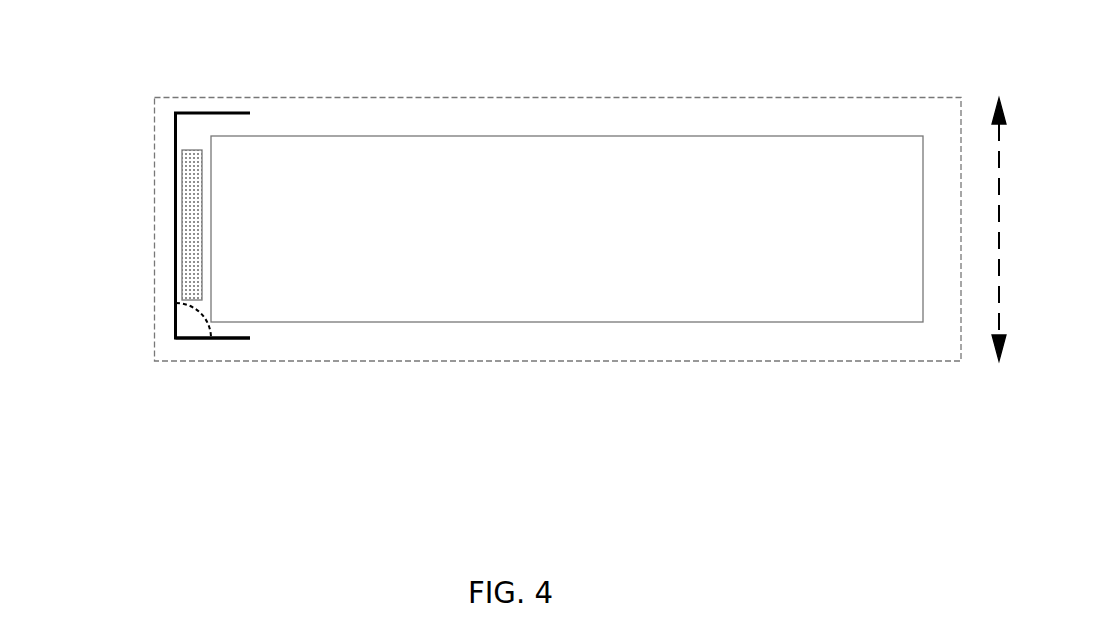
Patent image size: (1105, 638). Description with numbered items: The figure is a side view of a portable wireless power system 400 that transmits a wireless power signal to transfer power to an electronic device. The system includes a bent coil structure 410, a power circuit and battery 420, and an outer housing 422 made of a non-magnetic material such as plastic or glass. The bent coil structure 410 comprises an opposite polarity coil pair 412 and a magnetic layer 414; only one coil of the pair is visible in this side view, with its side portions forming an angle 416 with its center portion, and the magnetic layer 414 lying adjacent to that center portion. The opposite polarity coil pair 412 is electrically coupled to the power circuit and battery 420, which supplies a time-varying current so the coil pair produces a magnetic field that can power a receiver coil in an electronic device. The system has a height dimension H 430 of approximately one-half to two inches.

The portable wireless power system 400 is at (123, 505).
The bent coil structure 410 is at (120, 222).
The opposite polarity coil pair 412 is at (228, 338).
The magnetic layer 414 is at (193, 150).
The angle 416 is at (207, 322).
The power circuit and battery 420 is at (660, 136).
The outer housing 422 is at (698, 360).
The height dimension H 430 is at (999, 172).